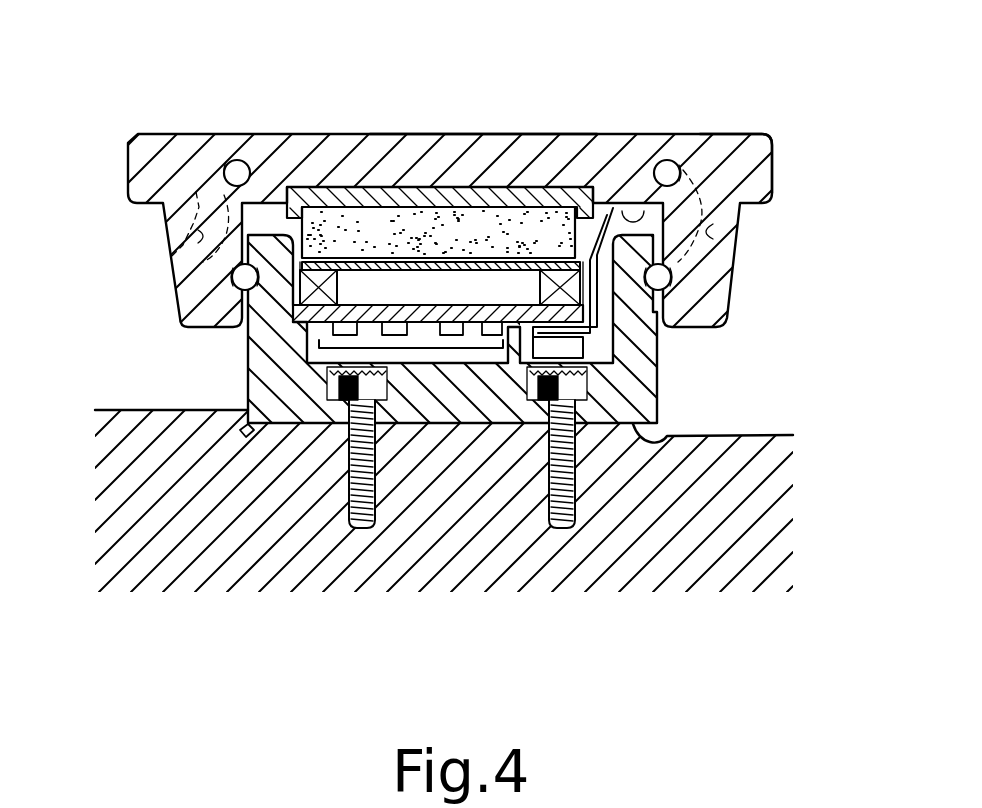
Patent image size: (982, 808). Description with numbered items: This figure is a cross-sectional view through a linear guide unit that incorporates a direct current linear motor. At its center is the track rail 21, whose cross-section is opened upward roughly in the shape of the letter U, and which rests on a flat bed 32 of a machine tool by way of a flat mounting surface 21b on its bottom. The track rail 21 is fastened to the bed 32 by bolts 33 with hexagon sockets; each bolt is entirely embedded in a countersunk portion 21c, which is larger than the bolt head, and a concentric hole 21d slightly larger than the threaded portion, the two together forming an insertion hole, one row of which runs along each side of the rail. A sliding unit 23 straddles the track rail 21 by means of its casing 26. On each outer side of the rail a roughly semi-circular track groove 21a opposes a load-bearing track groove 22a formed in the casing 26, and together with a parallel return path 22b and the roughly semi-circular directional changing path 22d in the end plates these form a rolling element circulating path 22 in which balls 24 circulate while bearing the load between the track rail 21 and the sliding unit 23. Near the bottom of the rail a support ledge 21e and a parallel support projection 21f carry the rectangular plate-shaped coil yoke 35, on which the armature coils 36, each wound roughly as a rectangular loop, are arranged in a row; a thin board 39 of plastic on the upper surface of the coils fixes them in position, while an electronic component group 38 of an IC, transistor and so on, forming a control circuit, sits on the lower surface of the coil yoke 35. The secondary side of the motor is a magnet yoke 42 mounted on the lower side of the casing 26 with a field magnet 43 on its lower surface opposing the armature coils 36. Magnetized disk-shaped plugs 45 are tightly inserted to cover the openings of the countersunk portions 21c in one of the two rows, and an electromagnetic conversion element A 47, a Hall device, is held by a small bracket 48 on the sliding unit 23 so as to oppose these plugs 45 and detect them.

The track rail 21 is at (658, 368).
The track groove 21a is at (232, 283).
The mounting surface 21b is at (688, 437).
The countersunk portion 21c is at (298, 425).
The hole 21d is at (363, 420).
The support ledge 21e is at (252, 350).
The support projection 21f is at (505, 400).
The rolling element circulating path 22 is at (189, 212).
The load-bearing track groove 22a is at (230, 278).
The return path 22b is at (225, 170).
The directional changing path 22d is at (195, 240).
The sliding unit 23 is at (753, 133).
The ball 24 is at (234, 160).
The casing 26 is at (577, 143).
The bed 32 is at (122, 440).
The bolt 33 is at (360, 530).
The coil yoke 35 is at (500, 305).
The armature coil 36 is at (338, 280).
The electronic component group 38 is at (413, 350).
The thin board 39 is at (446, 262).
The magnet yoke 42 is at (505, 230).
The field magnet 43 is at (405, 200).
The plug 45 is at (605, 368).
The electromagnetic conversion element A 47 is at (650, 340).
The small bracket 48 is at (608, 207).